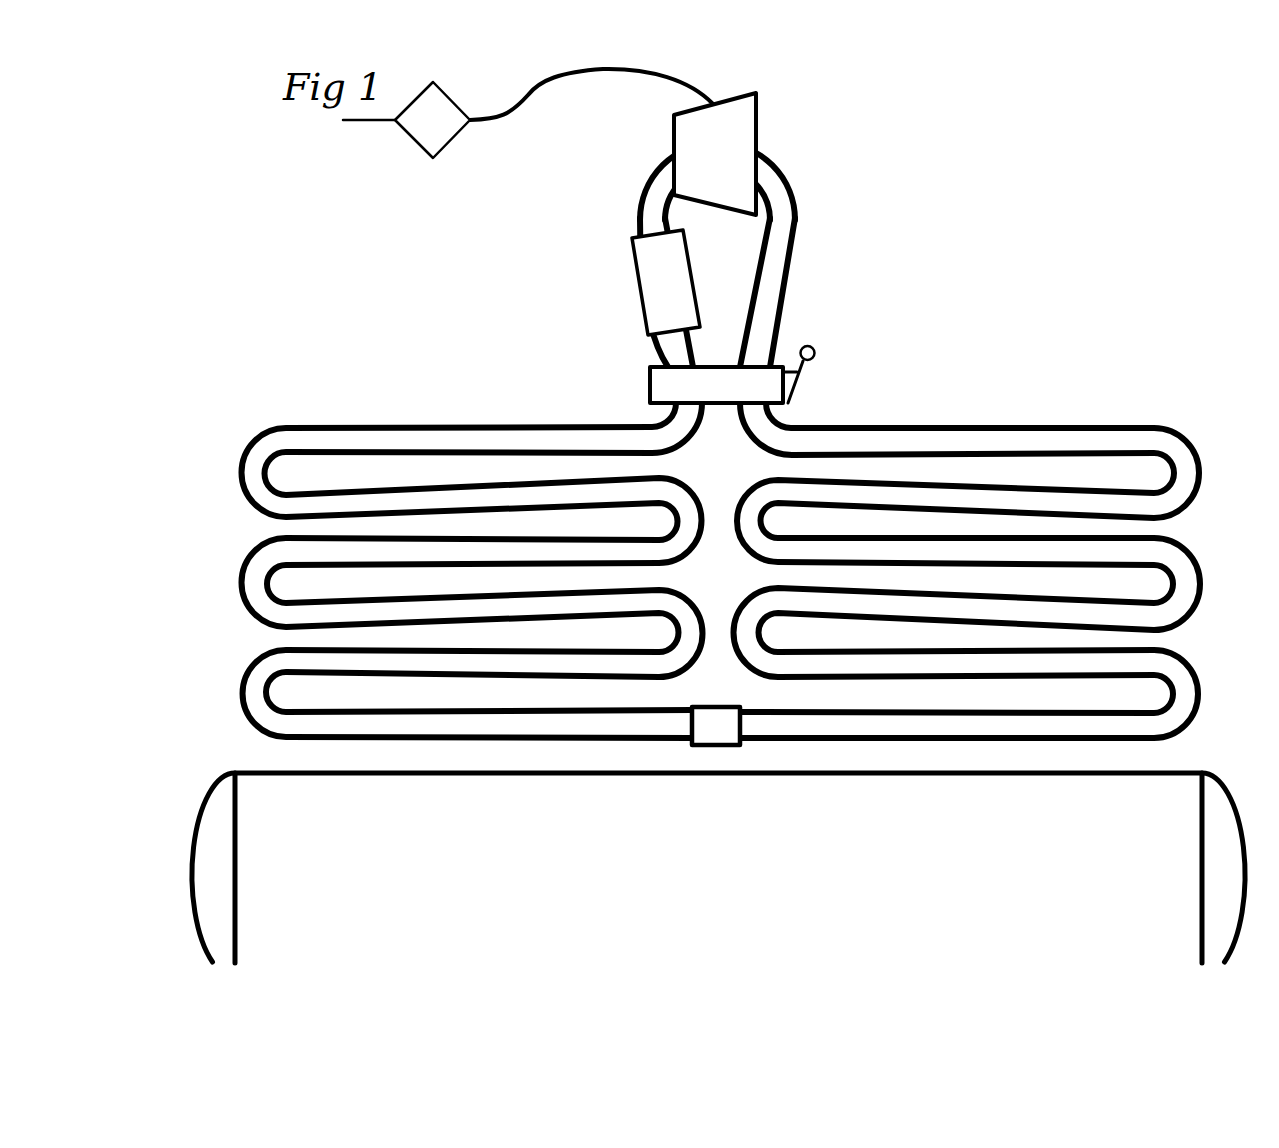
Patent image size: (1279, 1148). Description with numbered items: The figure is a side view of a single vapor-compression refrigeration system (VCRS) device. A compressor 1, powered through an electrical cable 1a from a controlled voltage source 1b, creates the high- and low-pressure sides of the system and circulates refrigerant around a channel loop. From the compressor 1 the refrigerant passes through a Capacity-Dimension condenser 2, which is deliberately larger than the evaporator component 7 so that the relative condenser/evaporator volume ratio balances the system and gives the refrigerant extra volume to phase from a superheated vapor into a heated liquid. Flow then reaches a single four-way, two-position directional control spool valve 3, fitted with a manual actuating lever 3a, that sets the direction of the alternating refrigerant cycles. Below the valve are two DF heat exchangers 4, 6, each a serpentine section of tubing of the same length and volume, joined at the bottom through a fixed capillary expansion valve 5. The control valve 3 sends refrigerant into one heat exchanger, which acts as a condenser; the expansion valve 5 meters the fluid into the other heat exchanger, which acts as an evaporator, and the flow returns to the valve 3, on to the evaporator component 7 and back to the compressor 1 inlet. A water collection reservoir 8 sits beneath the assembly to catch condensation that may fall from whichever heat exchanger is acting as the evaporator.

The compressor 1 is at (712, 166).
The electrical cable 1a is at (681, 77).
The controlled voltage source 1b is at (452, 142).
The Capacity-Dimension condenser 2 is at (640, 302).
The directional control spool valve 3 is at (710, 397).
The manual actuating lever 3a is at (815, 352).
The DF heat exchanger 4 is at (246, 566).
The expansion valve 5 is at (709, 737).
The DF heat exchanger 6 is at (1193, 560).
The evaporator component 7 is at (782, 303).
The water collection reservoir 8 is at (711, 863).